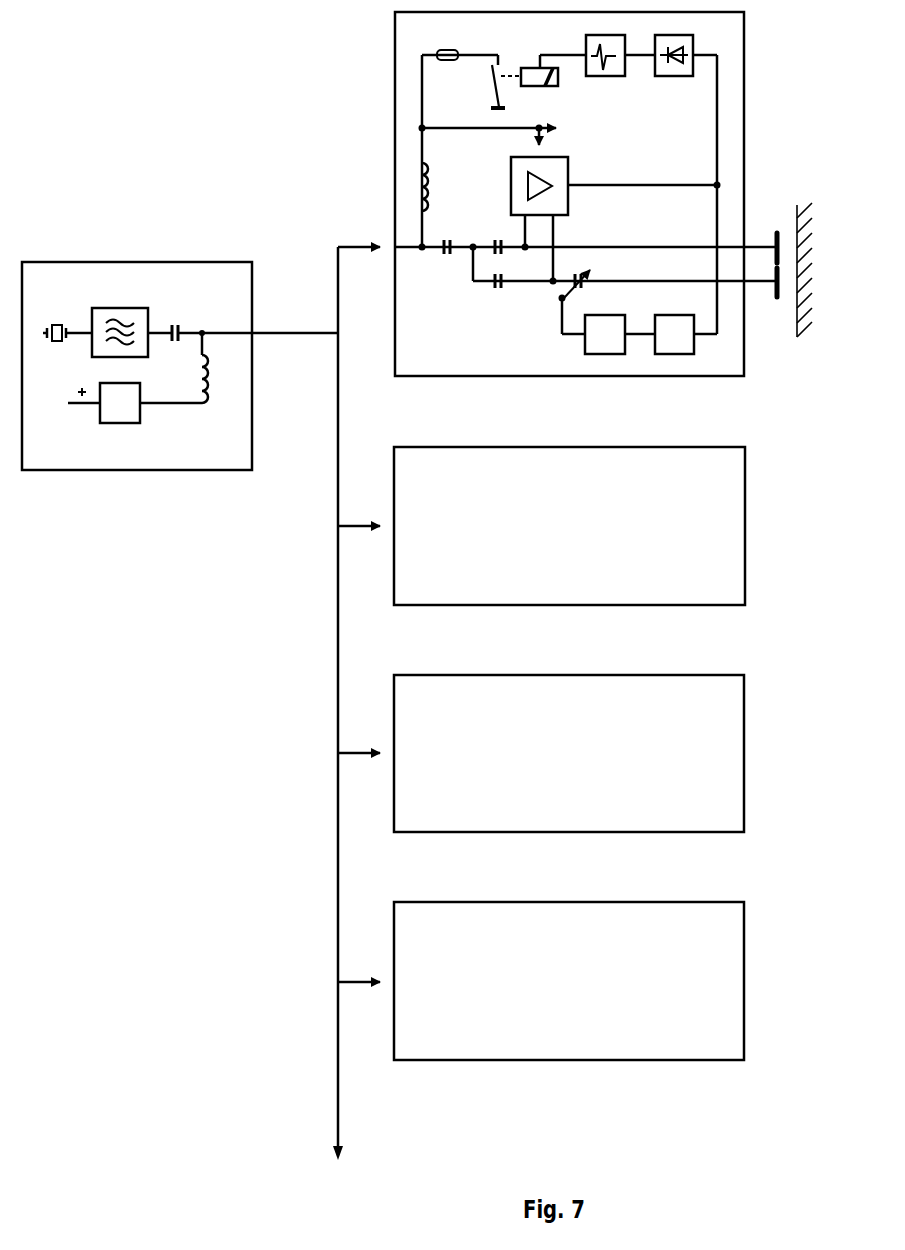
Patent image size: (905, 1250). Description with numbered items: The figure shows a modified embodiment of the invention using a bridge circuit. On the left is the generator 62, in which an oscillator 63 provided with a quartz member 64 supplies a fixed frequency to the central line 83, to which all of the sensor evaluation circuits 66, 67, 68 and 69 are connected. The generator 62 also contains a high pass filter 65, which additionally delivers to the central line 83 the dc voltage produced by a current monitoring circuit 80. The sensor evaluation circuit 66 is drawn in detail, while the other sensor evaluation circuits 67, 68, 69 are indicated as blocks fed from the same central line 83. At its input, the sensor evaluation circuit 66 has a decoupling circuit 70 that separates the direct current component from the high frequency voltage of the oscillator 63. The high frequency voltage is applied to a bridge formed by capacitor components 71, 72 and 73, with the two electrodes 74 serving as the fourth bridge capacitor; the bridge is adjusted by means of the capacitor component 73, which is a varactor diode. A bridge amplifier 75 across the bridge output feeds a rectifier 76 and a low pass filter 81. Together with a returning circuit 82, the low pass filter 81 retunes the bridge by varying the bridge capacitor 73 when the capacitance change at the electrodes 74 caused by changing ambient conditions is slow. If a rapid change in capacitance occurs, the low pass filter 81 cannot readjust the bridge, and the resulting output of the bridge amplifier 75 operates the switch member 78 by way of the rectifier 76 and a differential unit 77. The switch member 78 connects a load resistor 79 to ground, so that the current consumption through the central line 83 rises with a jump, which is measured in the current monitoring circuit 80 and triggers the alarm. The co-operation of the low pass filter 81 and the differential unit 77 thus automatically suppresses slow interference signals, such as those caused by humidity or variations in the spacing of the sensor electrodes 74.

The generator 62 is at (137, 366).
The oscillator 63 is at (132, 318).
The quartz member 64 is at (67, 318).
The high pass filter 65 is at (196, 350).
The sensor evaluation circuit 66 is at (585, 194).
The sensor evaluation circuit 67 is at (569, 526).
The sensor evaluation circuit 68 is at (569, 753).
The sensor evaluation circuit 69 is at (569, 981).
The decoupling circuit 70 is at (443, 208).
The capacitor component 71 is at (502, 233).
The capacitor component 72 is at (502, 296).
The capacitor component 73 is at (586, 302).
The electrodes 74 is at (790, 270).
The bridge amplifier 75 is at (614, 204).
The rectifier 76 is at (686, 70).
The differential unit 77 is at (620, 70).
The switch member 78 is at (539, 84).
The load resistor 79 is at (460, 69).
The current monitoring circuit 80 is at (104, 418).
The low pass filter 81 is at (686, 318).
The returning circuit 82 is at (620, 334).
The central line 83 is at (316, 703).